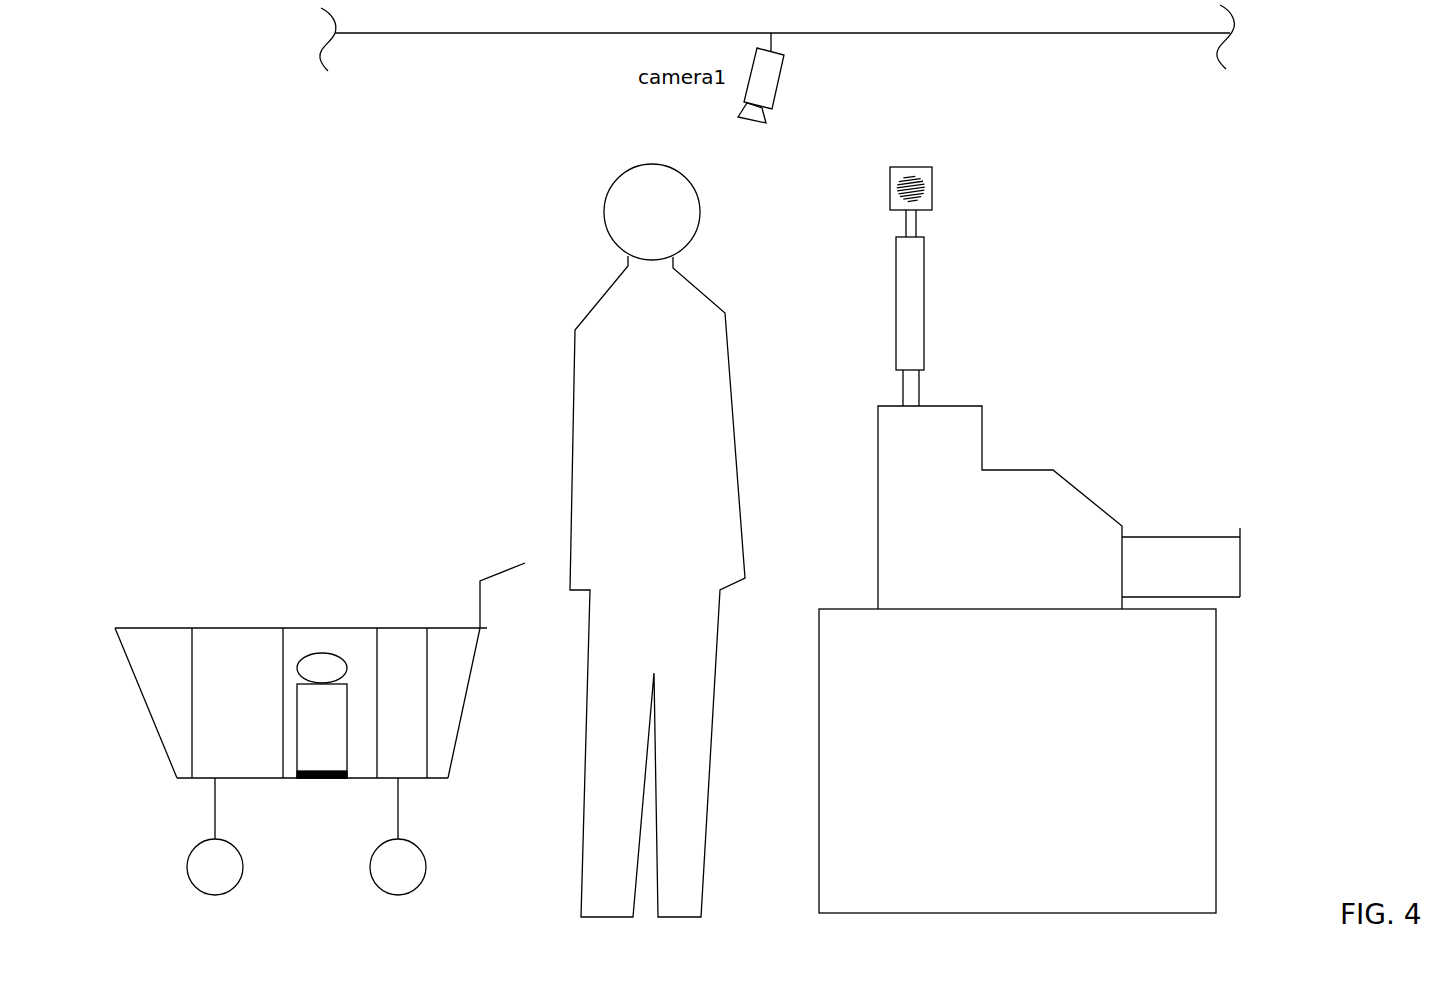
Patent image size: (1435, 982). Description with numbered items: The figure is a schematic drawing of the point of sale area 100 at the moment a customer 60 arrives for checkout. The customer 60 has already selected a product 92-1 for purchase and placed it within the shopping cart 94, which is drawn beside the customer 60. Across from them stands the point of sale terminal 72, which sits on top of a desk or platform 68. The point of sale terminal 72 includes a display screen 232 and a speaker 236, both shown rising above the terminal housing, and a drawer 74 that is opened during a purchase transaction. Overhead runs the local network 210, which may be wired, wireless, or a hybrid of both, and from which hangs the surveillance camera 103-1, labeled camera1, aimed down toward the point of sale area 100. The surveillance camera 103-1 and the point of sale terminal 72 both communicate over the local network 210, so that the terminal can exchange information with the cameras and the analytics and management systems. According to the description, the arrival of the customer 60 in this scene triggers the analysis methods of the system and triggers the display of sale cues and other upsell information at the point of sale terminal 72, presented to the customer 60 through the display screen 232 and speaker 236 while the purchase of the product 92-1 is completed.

The local network 210 is at (1138, 33).
The surveillance camera 103-1 is at (773, 88).
The point of sale area 100 is at (1160, 226).
The speaker 236 is at (892, 167).
The display screen 232 is at (923, 305).
The point of sale terminal 72 is at (963, 575).
The drawer 74 is at (1213, 573).
The desk or platform 68 is at (1216, 822).
The customer 60 is at (726, 313).
The shopping cart 94 is at (453, 750).
The product 92-1 is at (320, 670).